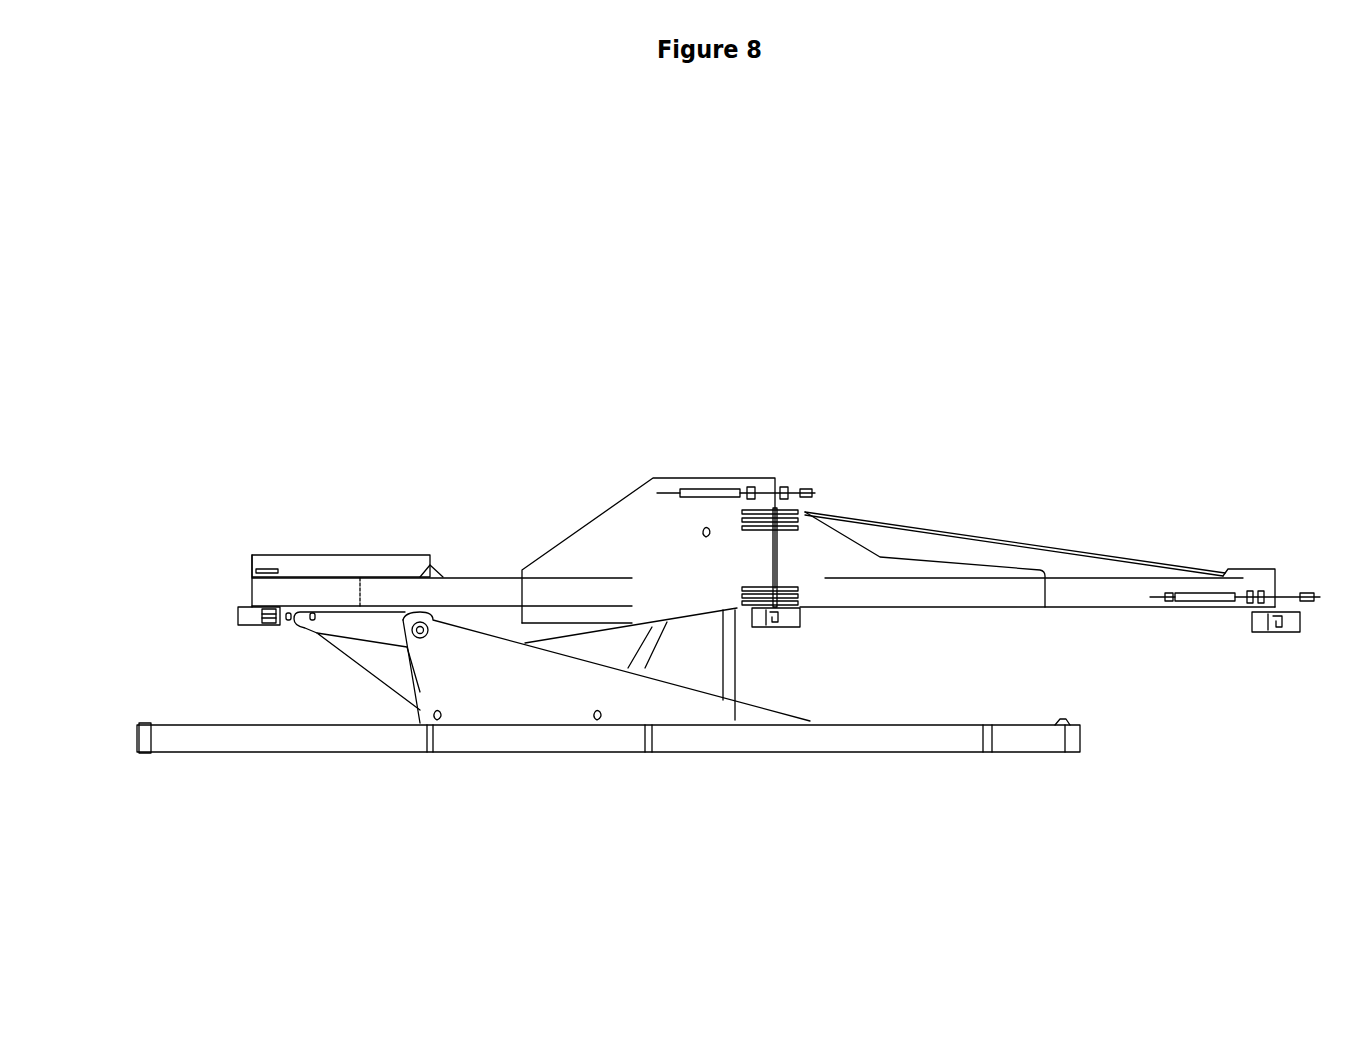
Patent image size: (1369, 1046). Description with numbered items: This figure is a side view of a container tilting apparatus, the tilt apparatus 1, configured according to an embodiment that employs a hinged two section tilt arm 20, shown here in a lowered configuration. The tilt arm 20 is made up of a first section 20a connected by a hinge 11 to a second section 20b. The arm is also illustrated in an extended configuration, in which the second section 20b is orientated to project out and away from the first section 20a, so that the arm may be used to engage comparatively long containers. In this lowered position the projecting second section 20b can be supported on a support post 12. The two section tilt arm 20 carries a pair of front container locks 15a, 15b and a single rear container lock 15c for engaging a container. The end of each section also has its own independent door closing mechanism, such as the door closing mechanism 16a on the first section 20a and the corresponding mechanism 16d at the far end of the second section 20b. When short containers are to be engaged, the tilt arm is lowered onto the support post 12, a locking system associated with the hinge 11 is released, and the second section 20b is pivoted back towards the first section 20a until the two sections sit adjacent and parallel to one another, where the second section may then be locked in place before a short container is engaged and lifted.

The tilt apparatus 1 is at (257, 477).
The tilt arm 20 is at (795, 422).
The first section 20a is at (567, 587).
The second section 20b is at (1073, 562).
The door closing mechanism 16a is at (803, 485).
The hydraulic cylinder 16d is at (1298, 582).
The hinge 11 is at (798, 598).
The support post 12 is at (737, 677).
The front container lock 15a is at (1275, 638).
The front container lock 15b is at (788, 633).
The rear container lock 15c is at (265, 628).